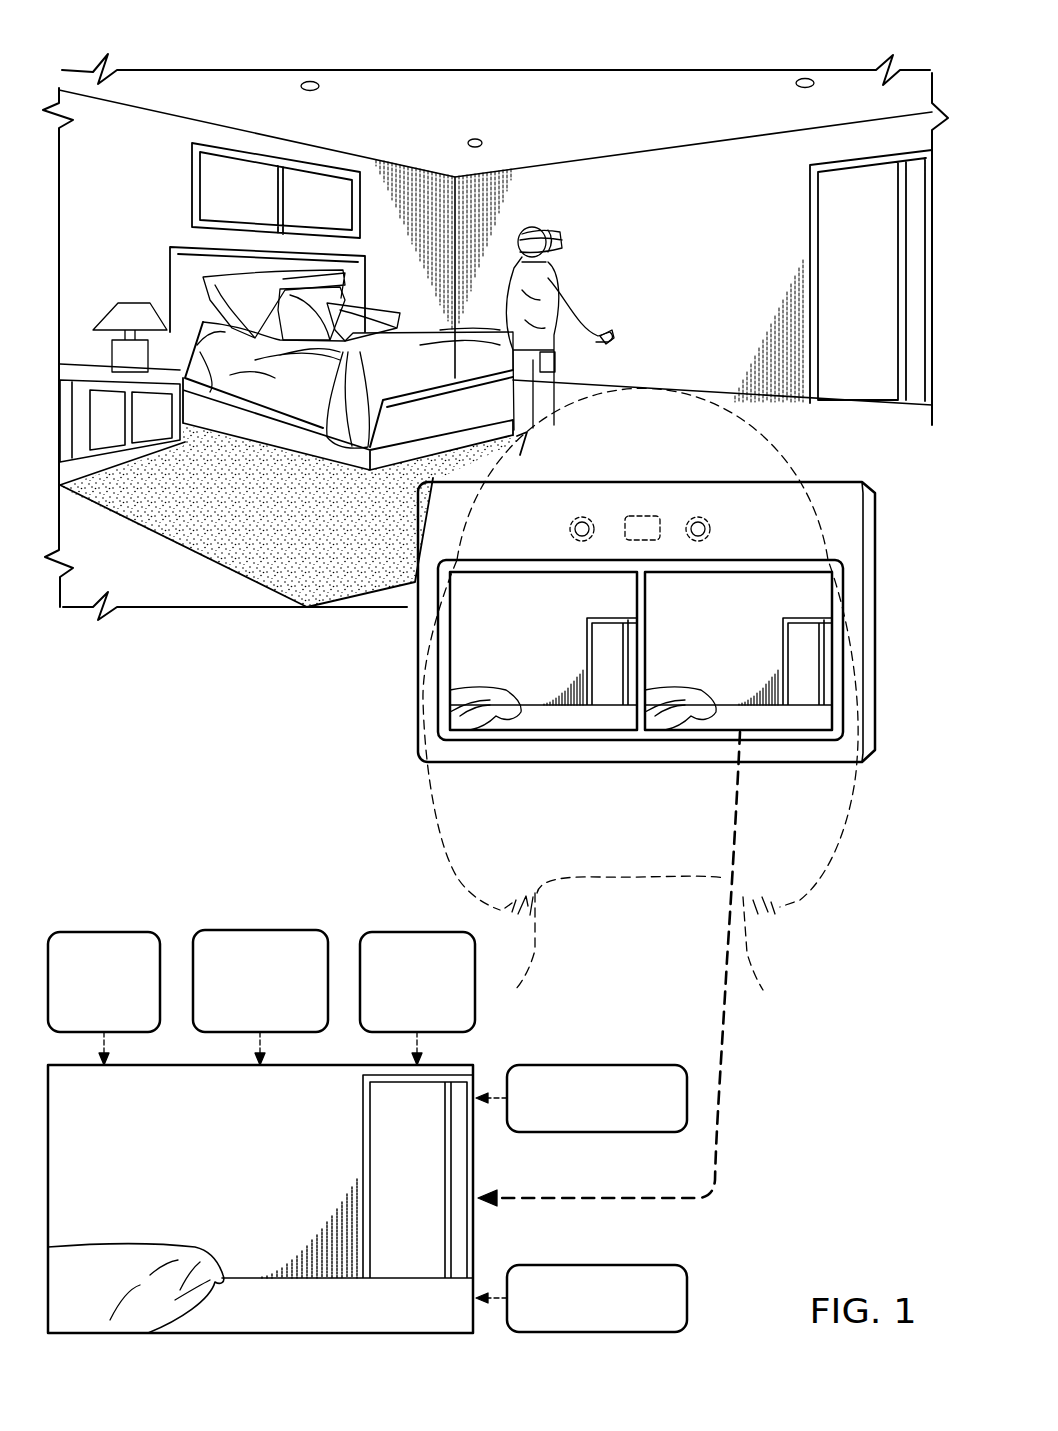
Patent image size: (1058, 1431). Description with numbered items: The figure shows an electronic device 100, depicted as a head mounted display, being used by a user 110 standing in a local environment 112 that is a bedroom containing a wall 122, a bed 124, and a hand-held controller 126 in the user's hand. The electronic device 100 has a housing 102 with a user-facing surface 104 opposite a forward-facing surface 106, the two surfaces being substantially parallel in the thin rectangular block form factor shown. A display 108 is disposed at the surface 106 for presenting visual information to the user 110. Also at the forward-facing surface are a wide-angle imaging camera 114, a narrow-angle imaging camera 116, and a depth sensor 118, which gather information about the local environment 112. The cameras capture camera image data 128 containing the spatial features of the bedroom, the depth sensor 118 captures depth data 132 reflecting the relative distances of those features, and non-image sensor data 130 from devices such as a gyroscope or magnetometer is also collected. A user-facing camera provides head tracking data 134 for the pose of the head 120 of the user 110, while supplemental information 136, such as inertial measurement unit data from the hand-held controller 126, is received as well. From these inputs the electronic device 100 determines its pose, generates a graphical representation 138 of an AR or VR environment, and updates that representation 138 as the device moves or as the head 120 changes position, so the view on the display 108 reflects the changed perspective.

The electronic device 100 is at (689, 525).
The housing 102 is at (878, 584).
The surface 104 is at (568, 749).
The surface 106 is at (868, 642).
The display 108 is at (790, 736).
The user 110 is at (568, 301).
The local environment 112 is at (495, 313).
The imaging camera 114 is at (568, 532).
The imaging camera 116 is at (712, 533).
The depth sensor 118 is at (640, 514).
The head 120 is at (780, 452).
The wall 122 is at (707, 168).
The bed 124 is at (425, 330).
The hand-held controller 126 is at (618, 343).
The camera image data 128 is at (93, 929).
The non-image sensor data 130 is at (254, 929).
The depth data 132 is at (407, 929).
The head tracking data 134 is at (597, 1063).
The supplemental information 136 is at (688, 1310).
The graphical representation 138 is at (478, 1221).